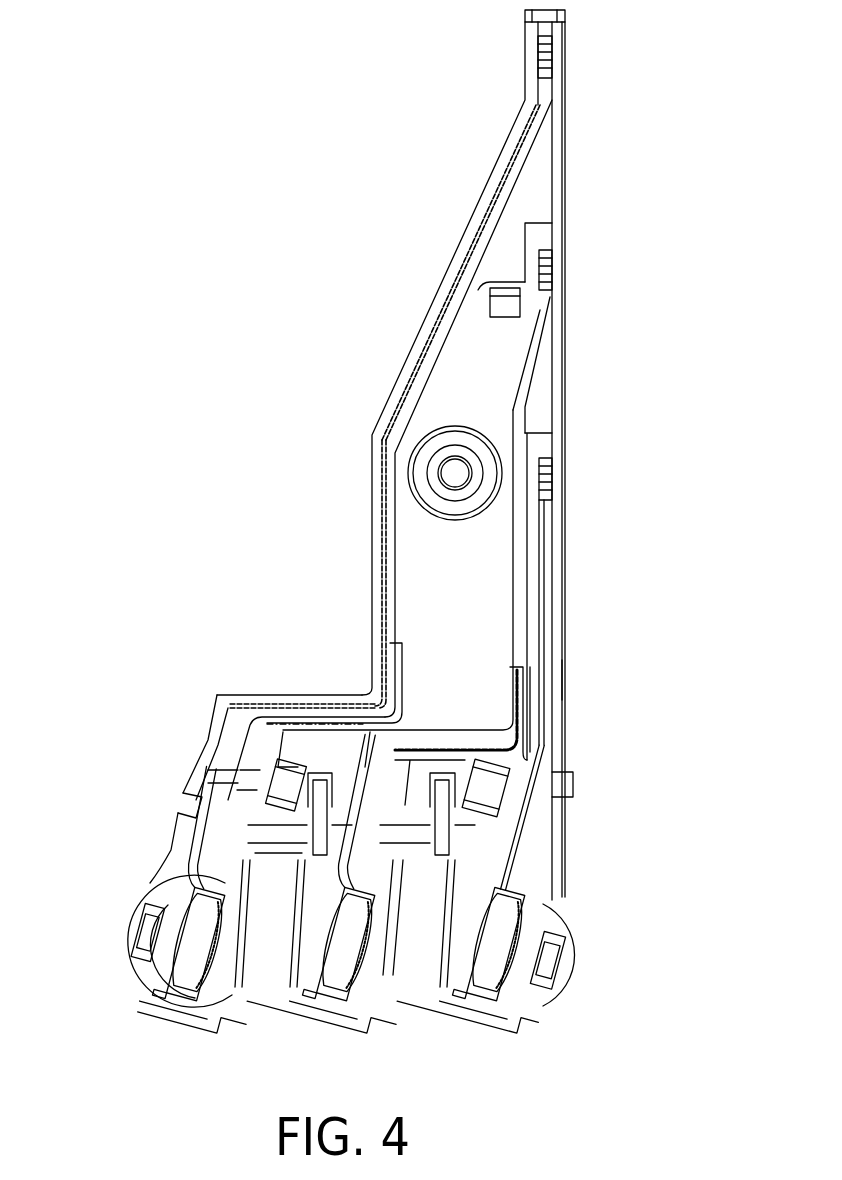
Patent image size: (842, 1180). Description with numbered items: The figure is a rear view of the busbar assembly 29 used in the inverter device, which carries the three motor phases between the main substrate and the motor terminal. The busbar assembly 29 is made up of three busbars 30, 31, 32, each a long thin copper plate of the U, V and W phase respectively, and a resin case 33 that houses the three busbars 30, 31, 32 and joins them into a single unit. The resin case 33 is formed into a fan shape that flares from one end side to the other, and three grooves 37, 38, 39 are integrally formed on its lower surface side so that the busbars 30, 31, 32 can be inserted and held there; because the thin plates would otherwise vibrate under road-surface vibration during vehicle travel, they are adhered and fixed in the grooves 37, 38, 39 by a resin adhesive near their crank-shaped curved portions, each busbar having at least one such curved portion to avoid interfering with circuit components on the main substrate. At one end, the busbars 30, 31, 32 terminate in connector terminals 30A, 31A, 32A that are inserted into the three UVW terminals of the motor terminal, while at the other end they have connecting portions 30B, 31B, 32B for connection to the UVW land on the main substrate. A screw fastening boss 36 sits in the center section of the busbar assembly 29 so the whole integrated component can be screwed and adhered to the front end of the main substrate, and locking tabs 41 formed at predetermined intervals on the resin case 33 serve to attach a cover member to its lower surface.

The busbar assembly 29 is at (322, 434).
The busbar 30 is at (390, 521).
The connector terminal 30A is at (168, 958).
The connecting portion 30B is at (538, 57).
The busbar 31 is at (537, 553).
The connector terminal 31A is at (363, 976).
The connecting portion 31B is at (548, 270).
The busbar 32 is at (552, 598).
The connector terminal 32A is at (512, 975).
The connecting portion 32B is at (550, 470).
The resin case 33 is at (218, 718).
The screw fastening boss 36 is at (462, 452).
The groove 37 is at (384, 566).
The groove 38 is at (512, 578).
The groove 39 is at (563, 640).
The locking tab 41 is at (183, 820).